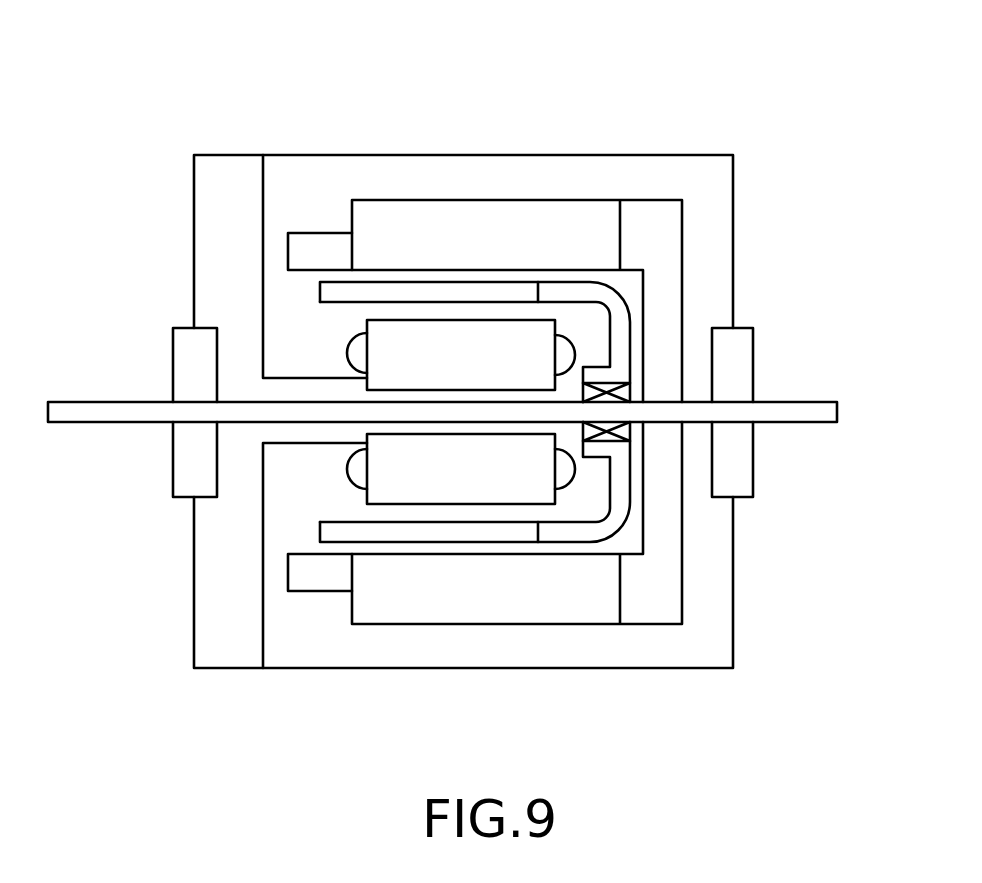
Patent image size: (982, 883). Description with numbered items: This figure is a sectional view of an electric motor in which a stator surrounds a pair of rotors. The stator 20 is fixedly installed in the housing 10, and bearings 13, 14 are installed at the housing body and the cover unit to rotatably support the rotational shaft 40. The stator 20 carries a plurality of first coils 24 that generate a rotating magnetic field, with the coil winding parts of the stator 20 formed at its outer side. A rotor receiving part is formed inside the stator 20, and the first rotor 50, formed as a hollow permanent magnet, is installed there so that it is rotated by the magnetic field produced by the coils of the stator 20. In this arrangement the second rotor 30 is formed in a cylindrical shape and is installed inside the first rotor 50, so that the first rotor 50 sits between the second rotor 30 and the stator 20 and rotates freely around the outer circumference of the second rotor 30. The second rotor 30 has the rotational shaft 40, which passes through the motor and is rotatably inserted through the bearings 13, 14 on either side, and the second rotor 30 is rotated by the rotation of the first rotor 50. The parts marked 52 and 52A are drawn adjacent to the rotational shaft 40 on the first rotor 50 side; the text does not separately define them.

The housing 10 is at (320, 143).
The bearing 13 is at (186, 470).
The bearing 14 is at (745, 357).
The stator 20 is at (393, 463).
The first coils 24 is at (363, 335).
The second rotor 30 is at (460, 220).
The rotational shaft 40 is at (812, 415).
The first rotor 50 is at (508, 290).
The connector 52 is at (636, 386).
The connector 52A is at (630, 432).